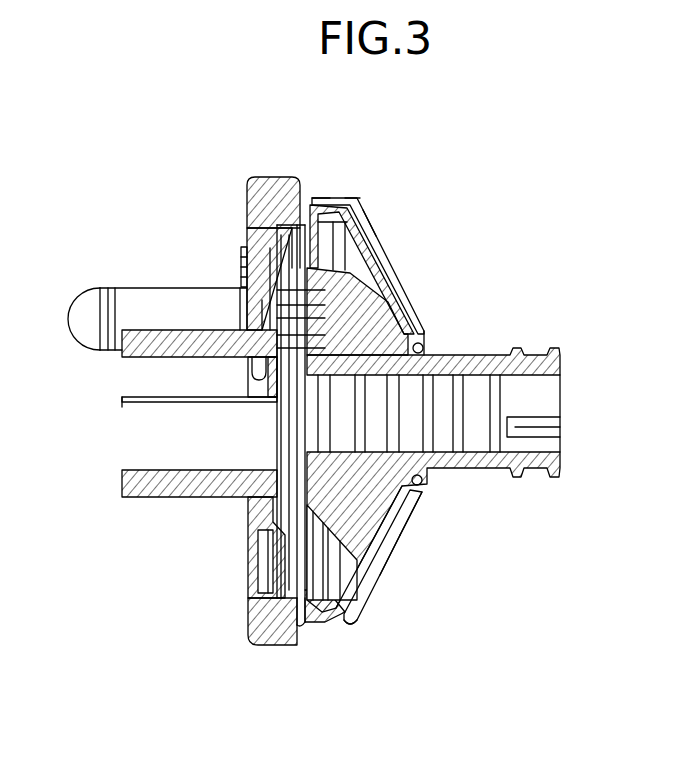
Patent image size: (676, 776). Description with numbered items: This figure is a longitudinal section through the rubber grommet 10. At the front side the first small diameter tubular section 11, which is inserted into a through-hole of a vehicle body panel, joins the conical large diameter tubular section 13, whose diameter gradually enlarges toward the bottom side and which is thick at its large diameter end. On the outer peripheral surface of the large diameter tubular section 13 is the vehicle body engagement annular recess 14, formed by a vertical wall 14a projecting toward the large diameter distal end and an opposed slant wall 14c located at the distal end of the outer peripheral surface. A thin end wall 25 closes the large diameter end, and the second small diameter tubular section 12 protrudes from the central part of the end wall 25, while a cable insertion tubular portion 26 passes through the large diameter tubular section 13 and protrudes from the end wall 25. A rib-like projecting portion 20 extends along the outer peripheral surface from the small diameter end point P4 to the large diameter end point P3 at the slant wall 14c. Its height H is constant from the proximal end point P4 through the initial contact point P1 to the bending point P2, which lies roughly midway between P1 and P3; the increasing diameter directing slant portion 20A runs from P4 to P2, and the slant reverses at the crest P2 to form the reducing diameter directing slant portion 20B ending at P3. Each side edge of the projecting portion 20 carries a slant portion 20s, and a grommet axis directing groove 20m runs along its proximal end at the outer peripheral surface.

The grommet 10 is at (125, 158).
The first small diameter tubular section 11 is at (532, 355).
The second small diameter tubular section 12 is at (162, 495).
The large diameter tubular section 13 is at (404, 548).
The vehicle body engagement annular recess 14 is at (300, 622).
The vertical wall 14a is at (288, 647).
The slant wall 14c is at (312, 622).
The projecting portion 20 is at (503, 600).
The increasing diameter directing slant portion 20A is at (373, 573).
The reducing diameter directing slant portion 20B is at (342, 620).
The slant portion 20s is at (412, 510).
The grommet axis directing groove 20m is at (405, 532).
The end wall 25 is at (260, 522).
The cable insertion tubular portion 26 is at (133, 287).
The initial contact point P1 is at (381, 236).
The bending point P2 is at (358, 200).
The large diameter end point P3 is at (313, 190).
The small diameter end point P4 is at (430, 340).
The height H is at (373, 327).